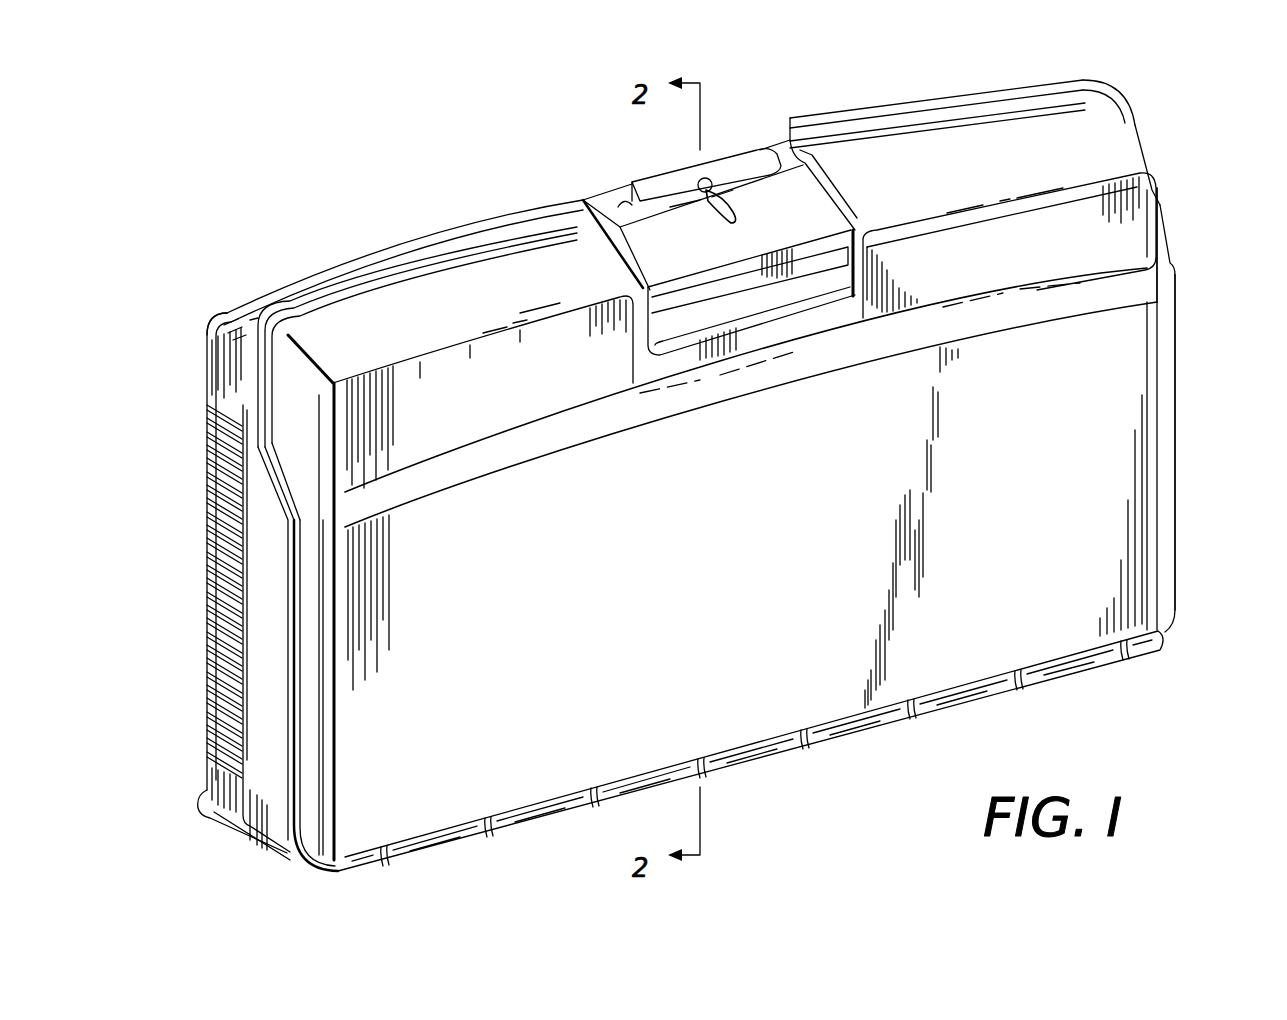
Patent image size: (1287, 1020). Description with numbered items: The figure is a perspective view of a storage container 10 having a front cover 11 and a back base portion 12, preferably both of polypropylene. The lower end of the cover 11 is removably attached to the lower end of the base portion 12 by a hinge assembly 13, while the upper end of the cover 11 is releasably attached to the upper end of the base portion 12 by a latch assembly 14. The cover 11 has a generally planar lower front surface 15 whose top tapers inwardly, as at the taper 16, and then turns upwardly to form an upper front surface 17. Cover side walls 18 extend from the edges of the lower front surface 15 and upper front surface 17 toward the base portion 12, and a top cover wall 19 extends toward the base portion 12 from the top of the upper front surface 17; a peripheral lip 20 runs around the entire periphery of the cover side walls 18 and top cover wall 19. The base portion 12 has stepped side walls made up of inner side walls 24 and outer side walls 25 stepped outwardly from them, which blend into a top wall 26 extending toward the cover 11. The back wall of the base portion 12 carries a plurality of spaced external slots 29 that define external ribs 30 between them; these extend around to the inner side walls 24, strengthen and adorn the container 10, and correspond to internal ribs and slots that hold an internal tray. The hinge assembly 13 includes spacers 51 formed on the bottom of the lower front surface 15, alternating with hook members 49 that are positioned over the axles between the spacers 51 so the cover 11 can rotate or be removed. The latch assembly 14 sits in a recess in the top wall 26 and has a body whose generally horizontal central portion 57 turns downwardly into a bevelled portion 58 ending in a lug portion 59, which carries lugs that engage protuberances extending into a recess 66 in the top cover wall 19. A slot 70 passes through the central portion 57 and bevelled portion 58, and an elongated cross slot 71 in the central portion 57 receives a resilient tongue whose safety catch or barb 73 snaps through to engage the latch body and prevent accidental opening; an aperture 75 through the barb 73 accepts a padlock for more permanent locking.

The storage container 10 is at (1180, 164).
The front cover 11 is at (1190, 396).
The back base portion 12 is at (196, 324).
The hinge assembly 13 is at (827, 755).
The latch assembly 14 is at (778, 135).
The lower front surface 15 is at (1120, 447).
The taper 16 is at (1097, 290).
The upper front surface 17 is at (1117, 217).
The cover side walls 18 is at (297, 437).
The top cover wall 19 is at (447, 303).
The peripheral lip 20 is at (293, 690).
The inner side walls 24 is at (228, 360).
The outer side walls 25 is at (270, 643).
The top wall 26 is at (385, 258).
The external slots 29 is at (210, 706).
The external ribs 30 is at (220, 573).
The hook members 49 is at (530, 827).
The spacers 51 is at (457, 847).
The central portion 57 is at (613, 200).
The bevelled portion 58 is at (808, 207).
The lug portion 59 is at (687, 287).
The recess 66 is at (860, 295).
The slot 70 is at (738, 214).
The cross slot 71 is at (625, 202).
The safety catch or barb 73 is at (668, 172).
The aperture 75 is at (709, 180).